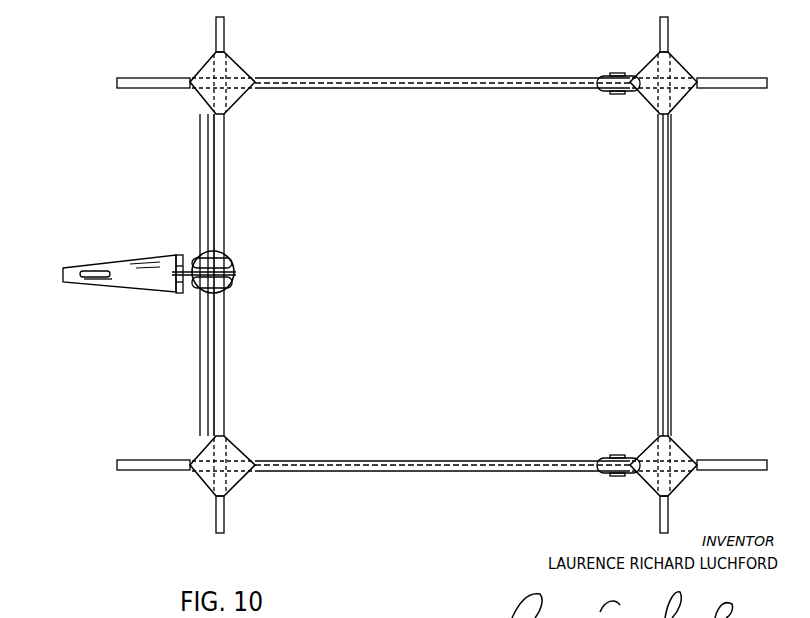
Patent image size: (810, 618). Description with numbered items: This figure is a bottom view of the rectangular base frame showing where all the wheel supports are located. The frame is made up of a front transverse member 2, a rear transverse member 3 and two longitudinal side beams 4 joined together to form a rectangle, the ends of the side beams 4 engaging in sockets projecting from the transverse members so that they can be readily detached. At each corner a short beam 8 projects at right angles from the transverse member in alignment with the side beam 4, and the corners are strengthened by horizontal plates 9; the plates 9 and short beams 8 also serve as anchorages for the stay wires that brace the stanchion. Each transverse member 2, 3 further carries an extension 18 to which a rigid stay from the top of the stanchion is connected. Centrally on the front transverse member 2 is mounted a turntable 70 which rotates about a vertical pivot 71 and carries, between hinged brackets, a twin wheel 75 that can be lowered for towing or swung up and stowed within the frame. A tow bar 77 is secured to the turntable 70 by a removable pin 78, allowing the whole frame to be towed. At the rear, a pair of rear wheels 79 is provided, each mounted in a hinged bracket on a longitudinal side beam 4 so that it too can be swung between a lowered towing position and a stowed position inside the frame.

The front transverse member 2 is at (218, 190).
The rear transverse member 3 is at (664, 275).
The side beam 4 is at (435, 88).
The short beam 8 is at (157, 88).
The horizontal plate 9 is at (236, 98).
The extension 18 is at (222, 40).
The turntable 70 is at (226, 290).
The vertical pivot 71 is at (234, 273).
The twin wheel 75 is at (228, 262).
The tow bar 77 is at (129, 285).
The removable pin 78 is at (181, 296).
The rear wheel 79 is at (600, 88).